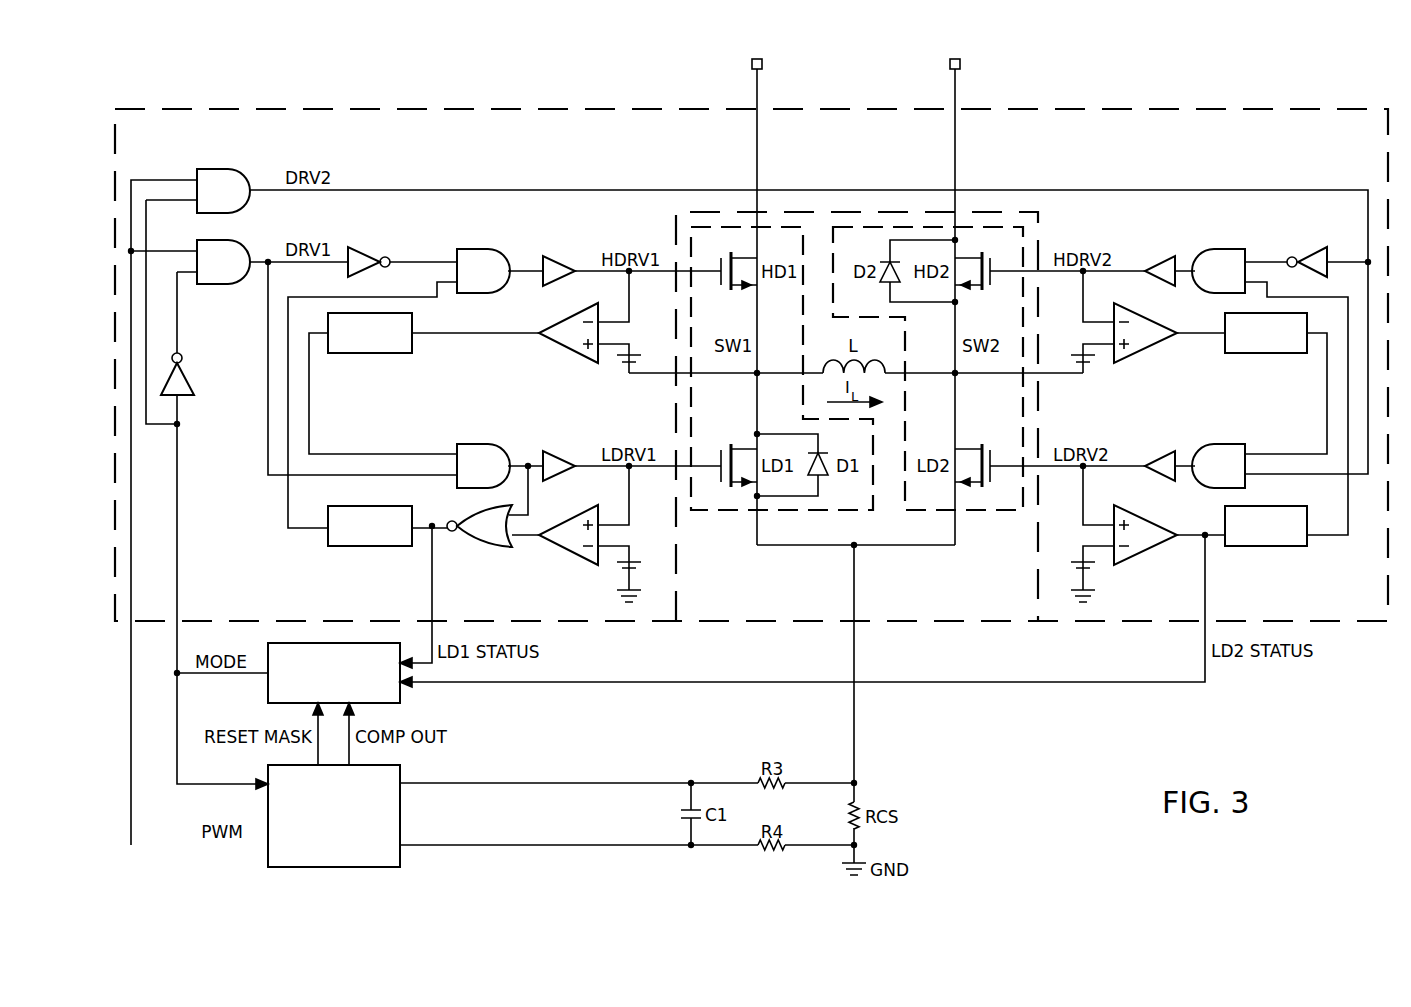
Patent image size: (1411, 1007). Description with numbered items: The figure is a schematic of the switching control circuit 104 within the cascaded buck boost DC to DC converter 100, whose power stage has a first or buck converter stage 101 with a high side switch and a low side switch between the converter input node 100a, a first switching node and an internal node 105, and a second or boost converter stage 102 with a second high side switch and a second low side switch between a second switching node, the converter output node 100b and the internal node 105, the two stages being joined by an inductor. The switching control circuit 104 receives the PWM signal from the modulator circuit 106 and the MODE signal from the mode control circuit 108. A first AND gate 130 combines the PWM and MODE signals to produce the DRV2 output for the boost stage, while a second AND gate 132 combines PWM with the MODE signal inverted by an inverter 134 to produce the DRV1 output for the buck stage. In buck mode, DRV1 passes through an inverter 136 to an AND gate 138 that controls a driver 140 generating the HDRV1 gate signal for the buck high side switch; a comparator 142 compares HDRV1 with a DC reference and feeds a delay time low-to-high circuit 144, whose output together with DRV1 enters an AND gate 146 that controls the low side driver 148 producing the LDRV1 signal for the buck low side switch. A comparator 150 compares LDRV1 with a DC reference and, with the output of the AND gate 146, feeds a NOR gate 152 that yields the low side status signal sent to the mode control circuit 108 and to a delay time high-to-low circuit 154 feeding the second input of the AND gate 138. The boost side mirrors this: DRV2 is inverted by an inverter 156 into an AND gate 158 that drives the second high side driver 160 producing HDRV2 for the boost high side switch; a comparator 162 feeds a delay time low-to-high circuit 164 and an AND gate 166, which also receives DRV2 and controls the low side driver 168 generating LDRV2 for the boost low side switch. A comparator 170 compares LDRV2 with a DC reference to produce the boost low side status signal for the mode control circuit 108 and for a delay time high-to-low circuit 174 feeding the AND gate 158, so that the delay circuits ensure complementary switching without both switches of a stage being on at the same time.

The cascaded buck boost DC to DC converter 100 is at (180, 78).
The converter input node 100a is at (756, 88).
The converter output node 100b is at (956, 88).
The first converter stage 101 is at (720, 520).
The second converter stage 102 is at (990, 520).
The switching control circuit 104 is at (1240, 104).
The internal node 105 is at (893, 547).
The modulator circuit 106 is at (316, 845).
The mode control circuit 108 is at (268, 690).
The first AND gate 130 is at (224, 169).
The second AND gate 132 is at (225, 284).
The inverter 134 is at (186, 378).
The inverter 136 is at (370, 252).
The AND gate 138 is at (482, 249).
The driver 140 is at (560, 258).
The comparator 142 is at (568, 352).
The delay time low-to-high circuit 144 is at (370, 353).
The AND gate 146 is at (484, 444).
The low side driver 148 is at (560, 452).
The comparator 150 is at (567, 556).
The NOR gate 152 is at (478, 548).
The delay time high-to-low circuit 154 is at (370, 546).
The inverter 156 is at (1310, 253).
The AND gate 158 is at (1225, 249).
The second high side driver 160 is at (1158, 258).
The comparator 162 is at (1148, 352).
The delay time low-to-high circuit 164 is at (1270, 353).
The AND gate 166 is at (1225, 444).
The low side driver 168 is at (1158, 453).
The comparator 170 is at (1148, 555).
The delay time high-to-low circuit 174 is at (1268, 546).